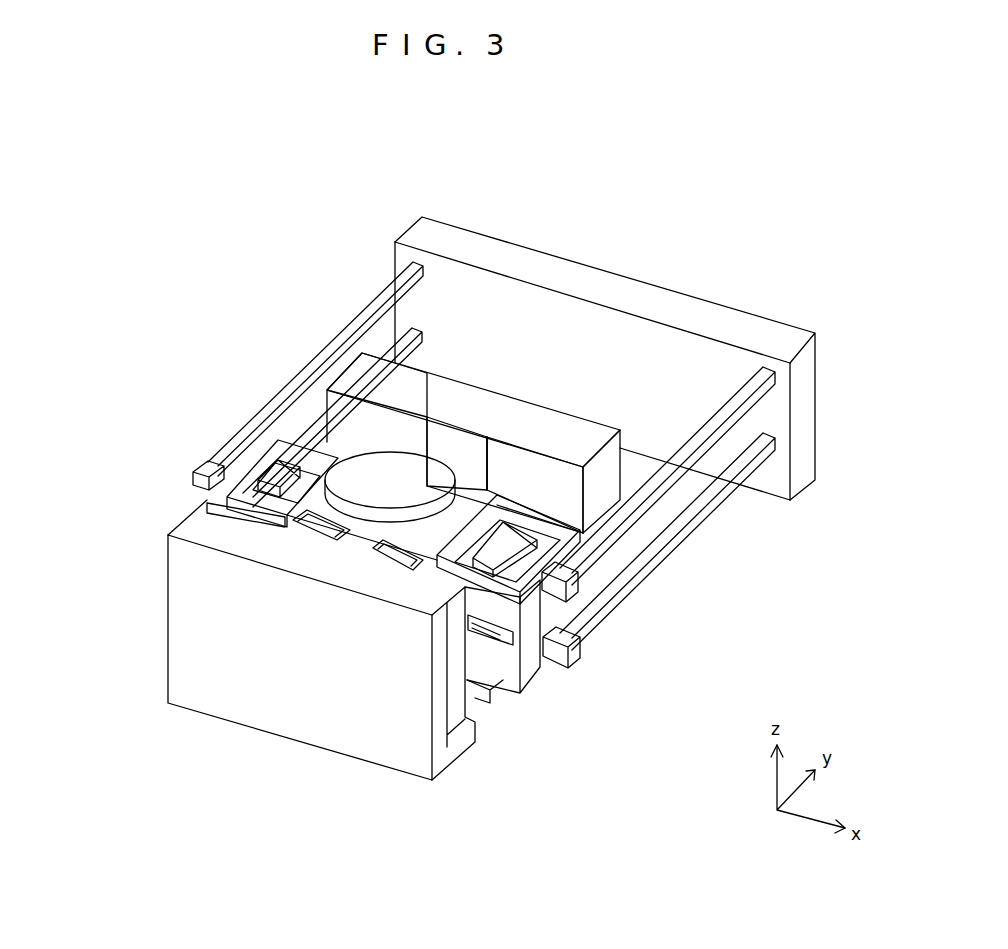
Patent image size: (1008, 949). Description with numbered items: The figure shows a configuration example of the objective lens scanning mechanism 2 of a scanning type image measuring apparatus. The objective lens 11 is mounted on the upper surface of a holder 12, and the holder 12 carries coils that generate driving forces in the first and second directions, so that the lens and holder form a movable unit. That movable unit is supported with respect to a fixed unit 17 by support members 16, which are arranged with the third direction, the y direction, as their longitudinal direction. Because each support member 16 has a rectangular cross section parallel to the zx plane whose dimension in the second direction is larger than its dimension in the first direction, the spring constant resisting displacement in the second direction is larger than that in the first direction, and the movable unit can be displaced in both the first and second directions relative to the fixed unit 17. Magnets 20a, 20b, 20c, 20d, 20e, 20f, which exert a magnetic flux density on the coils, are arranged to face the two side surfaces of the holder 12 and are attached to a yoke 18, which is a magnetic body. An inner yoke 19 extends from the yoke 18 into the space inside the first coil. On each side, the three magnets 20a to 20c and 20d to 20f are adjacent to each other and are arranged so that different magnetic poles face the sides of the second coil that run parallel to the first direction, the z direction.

The objective lens scanning mechanism 2 is at (680, 185).
The objective lens 11 is at (363, 477).
The holder 12 is at (310, 510).
The support member 16 is at (385, 293).
The fixed unit 17 is at (678, 292).
The yoke 18 is at (440, 378).
The inner yoke 19 is at (287, 457).
The magnet 20a is at (238, 527).
The magnet 20b is at (322, 553).
The magnet 20c is at (407, 575).
The magnet 20d is at (350, 387).
The magnet 20e is at (470, 413).
The magnet 20f is at (540, 433).